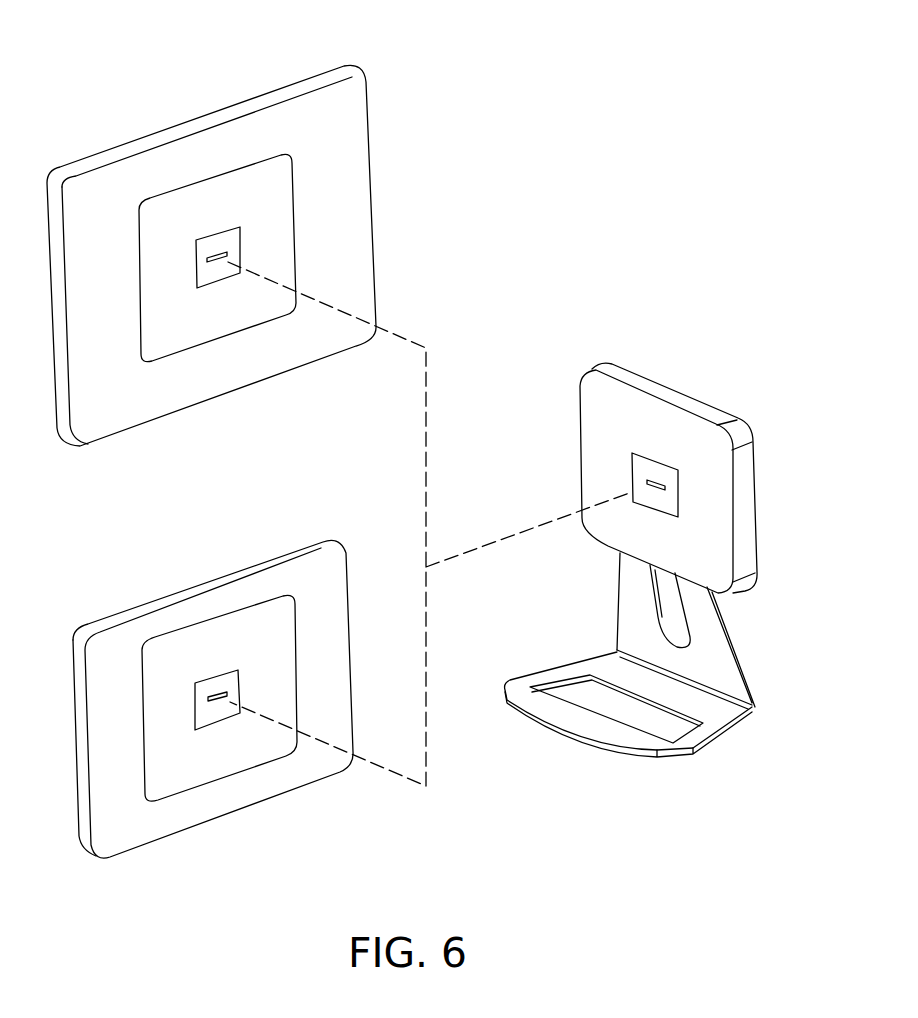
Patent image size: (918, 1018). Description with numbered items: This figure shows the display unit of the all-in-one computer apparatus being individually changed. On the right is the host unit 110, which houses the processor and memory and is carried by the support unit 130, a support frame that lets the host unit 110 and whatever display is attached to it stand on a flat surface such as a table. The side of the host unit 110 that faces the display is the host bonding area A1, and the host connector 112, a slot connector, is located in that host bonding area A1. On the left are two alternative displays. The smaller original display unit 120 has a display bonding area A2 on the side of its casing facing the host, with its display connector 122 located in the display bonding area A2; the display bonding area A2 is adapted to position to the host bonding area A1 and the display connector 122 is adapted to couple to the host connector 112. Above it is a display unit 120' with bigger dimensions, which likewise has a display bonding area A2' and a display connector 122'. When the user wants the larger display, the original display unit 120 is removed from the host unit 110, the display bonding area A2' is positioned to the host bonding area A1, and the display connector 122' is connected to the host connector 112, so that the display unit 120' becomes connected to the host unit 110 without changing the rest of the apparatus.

The host unit 110 is at (748, 488).
The host connector 112 is at (652, 480).
The support unit 130 is at (715, 633).
The display unit 120 is at (213, 671).
The display connector 122 is at (220, 777).
The display unit 120' is at (211, 231).
The display connector 122' is at (233, 340).
The host bonding area A1 is at (650, 393).
The display bonding area A2 is at (219, 648).
The display bonding area A2' is at (217, 204).